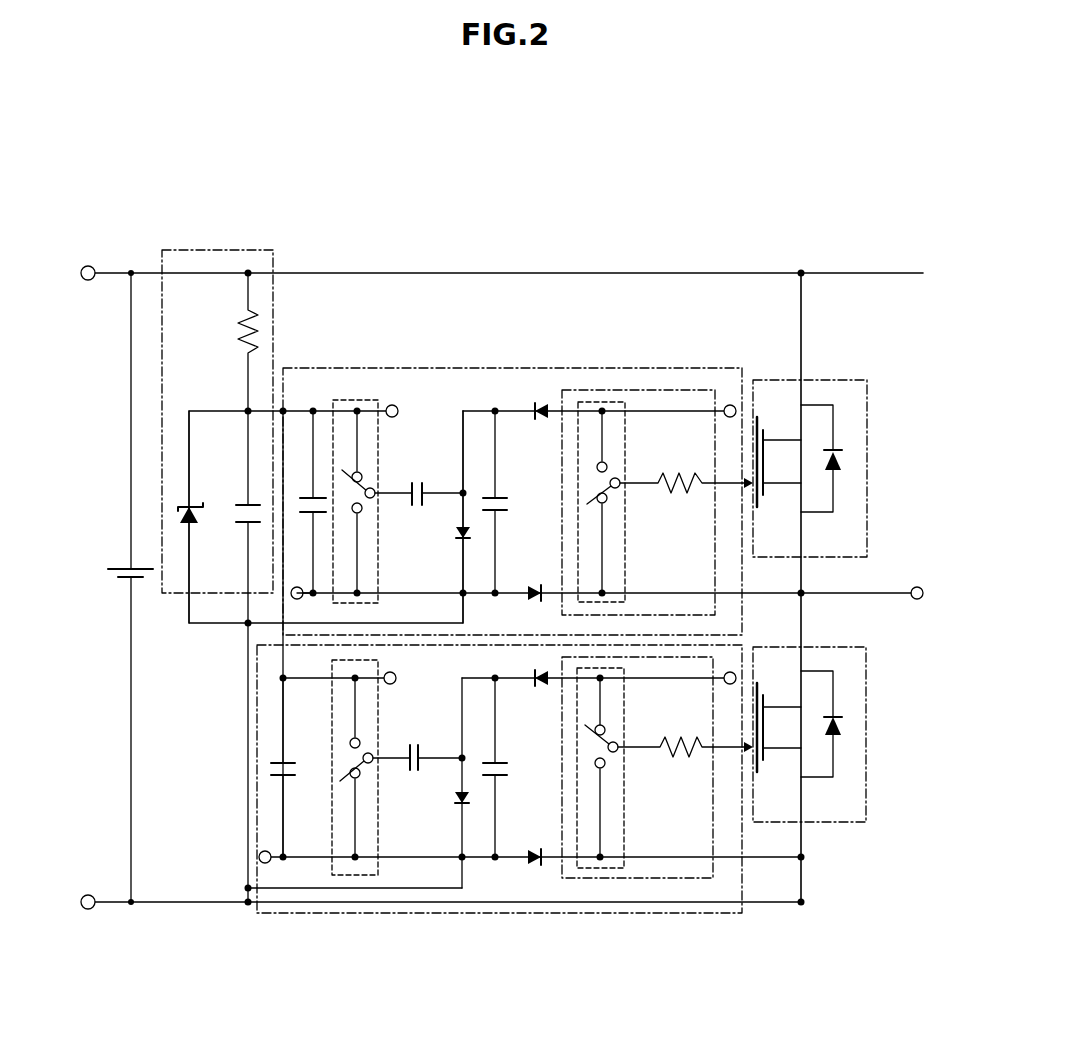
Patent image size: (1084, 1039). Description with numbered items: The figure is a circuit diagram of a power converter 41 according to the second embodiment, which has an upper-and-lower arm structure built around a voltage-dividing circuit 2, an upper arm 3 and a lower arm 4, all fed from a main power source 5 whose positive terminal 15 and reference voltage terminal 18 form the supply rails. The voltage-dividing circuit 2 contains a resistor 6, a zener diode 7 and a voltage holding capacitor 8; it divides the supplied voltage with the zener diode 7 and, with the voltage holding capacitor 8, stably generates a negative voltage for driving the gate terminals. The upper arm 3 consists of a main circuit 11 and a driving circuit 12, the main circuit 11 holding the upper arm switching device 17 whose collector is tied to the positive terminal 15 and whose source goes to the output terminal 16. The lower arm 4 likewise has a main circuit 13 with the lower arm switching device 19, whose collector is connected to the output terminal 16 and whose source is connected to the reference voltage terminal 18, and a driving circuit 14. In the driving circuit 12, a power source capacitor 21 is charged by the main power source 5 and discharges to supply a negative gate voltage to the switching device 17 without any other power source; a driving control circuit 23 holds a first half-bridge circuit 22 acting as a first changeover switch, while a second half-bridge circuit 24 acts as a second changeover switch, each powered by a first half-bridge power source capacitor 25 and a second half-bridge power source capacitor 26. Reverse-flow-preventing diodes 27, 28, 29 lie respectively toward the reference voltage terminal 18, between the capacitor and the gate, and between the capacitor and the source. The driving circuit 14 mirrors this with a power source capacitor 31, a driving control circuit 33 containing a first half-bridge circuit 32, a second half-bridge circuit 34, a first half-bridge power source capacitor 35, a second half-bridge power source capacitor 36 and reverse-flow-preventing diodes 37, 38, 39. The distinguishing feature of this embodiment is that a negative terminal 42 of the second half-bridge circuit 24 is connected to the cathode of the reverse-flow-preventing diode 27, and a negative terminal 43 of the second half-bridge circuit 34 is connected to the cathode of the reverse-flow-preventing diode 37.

The voltage-dividing circuit 2 is at (218, 250).
The upper arm 3 is at (876, 492).
The lower arm 4 is at (876, 746).
The main power source 5 is at (120, 566).
The resistor 6 is at (270, 330).
The zener diode 7 is at (196, 520).
The voltage holding capacitor 8 is at (245, 504).
The main circuit 11 is at (868, 418).
The driving circuit 12 is at (485, 366).
The main circuit 13 is at (867, 688).
The conduction control terminal driving circuit 14 is at (464, 914).
The positive terminal 15 is at (89, 266).
The output terminal 16 is at (917, 587).
The upper arm switching device 17 is at (775, 438).
The reference voltage terminal 18 is at (85, 910).
The lower arm switching device 19 is at (775, 750).
The conduction control terminal power source capacitor 21 is at (418, 482).
The first half-bridge circuit 22 is at (610, 402).
The conduction control terminal driving control circuit 23 is at (678, 390).
The second half-bridge circuit 24 is at (366, 400).
The first half-bridge power source capacitor 25 is at (500, 496).
The second half-bridge power source capacitor 26 is at (313, 496).
The reverse-flow-preventing diode 27 is at (458, 534).
The reverse-flow-preventing diode 28 is at (536, 403).
The reverse-flow-preventing diode 29 is at (541, 586).
The power source capacitor 31 is at (417, 744).
The first half-bridge circuit 32 is at (590, 878).
The conduction control terminal driving control circuit 33 is at (673, 878).
The second half-bridge circuit 34 is at (350, 876).
The first half-bridge power source capacitor 35 is at (500, 760).
The second half-bridge power source capacitor 36 is at (284, 762).
The reverse-flow-preventing diode 37 is at (454, 800).
The reverse-flow-preventing diode 38 is at (536, 670).
The reverse-flow-preventing diode 39 is at (541, 850).
The power converter 41 is at (606, 220).
The negative terminal 42 is at (295, 600).
The negative terminal 43 is at (258, 854).